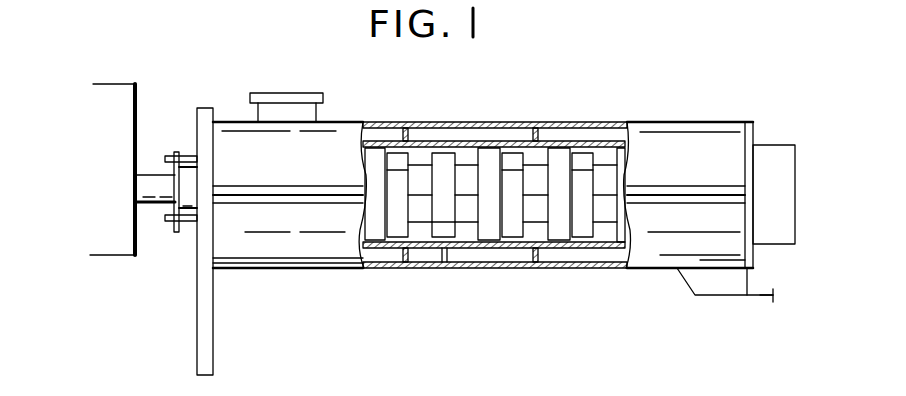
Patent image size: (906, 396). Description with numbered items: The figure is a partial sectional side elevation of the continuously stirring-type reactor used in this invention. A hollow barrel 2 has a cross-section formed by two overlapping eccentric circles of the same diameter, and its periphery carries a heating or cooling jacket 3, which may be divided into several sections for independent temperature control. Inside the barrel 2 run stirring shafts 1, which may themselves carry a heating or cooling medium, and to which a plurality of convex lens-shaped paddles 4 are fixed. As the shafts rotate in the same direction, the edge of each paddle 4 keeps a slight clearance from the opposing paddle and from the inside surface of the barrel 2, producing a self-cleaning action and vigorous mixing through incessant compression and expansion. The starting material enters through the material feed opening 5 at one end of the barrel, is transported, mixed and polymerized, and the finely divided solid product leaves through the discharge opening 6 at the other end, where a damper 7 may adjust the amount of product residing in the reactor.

The stirring shaft 1 is at (150, 178).
The barrel 2 is at (447, 250).
The heating or cooling jacket 3 is at (518, 255).
The paddle 4 is at (421, 172).
The material feed opening 5 is at (300, 93).
The discharge opening 6 is at (722, 297).
The damper 7 is at (767, 298).